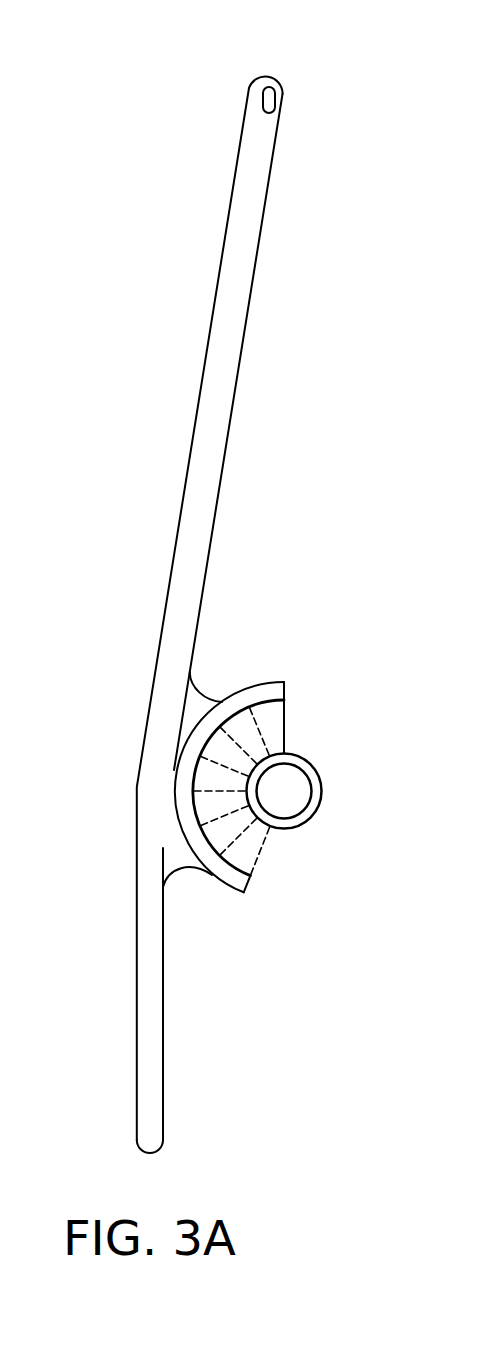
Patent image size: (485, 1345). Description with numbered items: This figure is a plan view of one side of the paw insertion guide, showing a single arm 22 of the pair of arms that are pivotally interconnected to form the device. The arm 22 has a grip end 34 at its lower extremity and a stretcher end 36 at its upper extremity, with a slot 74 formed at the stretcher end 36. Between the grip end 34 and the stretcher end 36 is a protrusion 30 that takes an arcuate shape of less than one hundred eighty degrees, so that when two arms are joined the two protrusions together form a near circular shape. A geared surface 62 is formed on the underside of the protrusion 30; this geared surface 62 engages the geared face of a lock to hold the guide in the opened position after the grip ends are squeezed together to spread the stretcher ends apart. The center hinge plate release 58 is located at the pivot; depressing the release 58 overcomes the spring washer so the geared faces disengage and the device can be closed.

The arm 22 is at (197, 481).
The stretcher end 36 is at (283, 93).
The slot 74 is at (264, 90).
The geared surface 62 is at (283, 690).
The protrusion 30 is at (227, 876).
The center hinge plate release 58 is at (320, 808).
The grip end 34 is at (148, 1043).